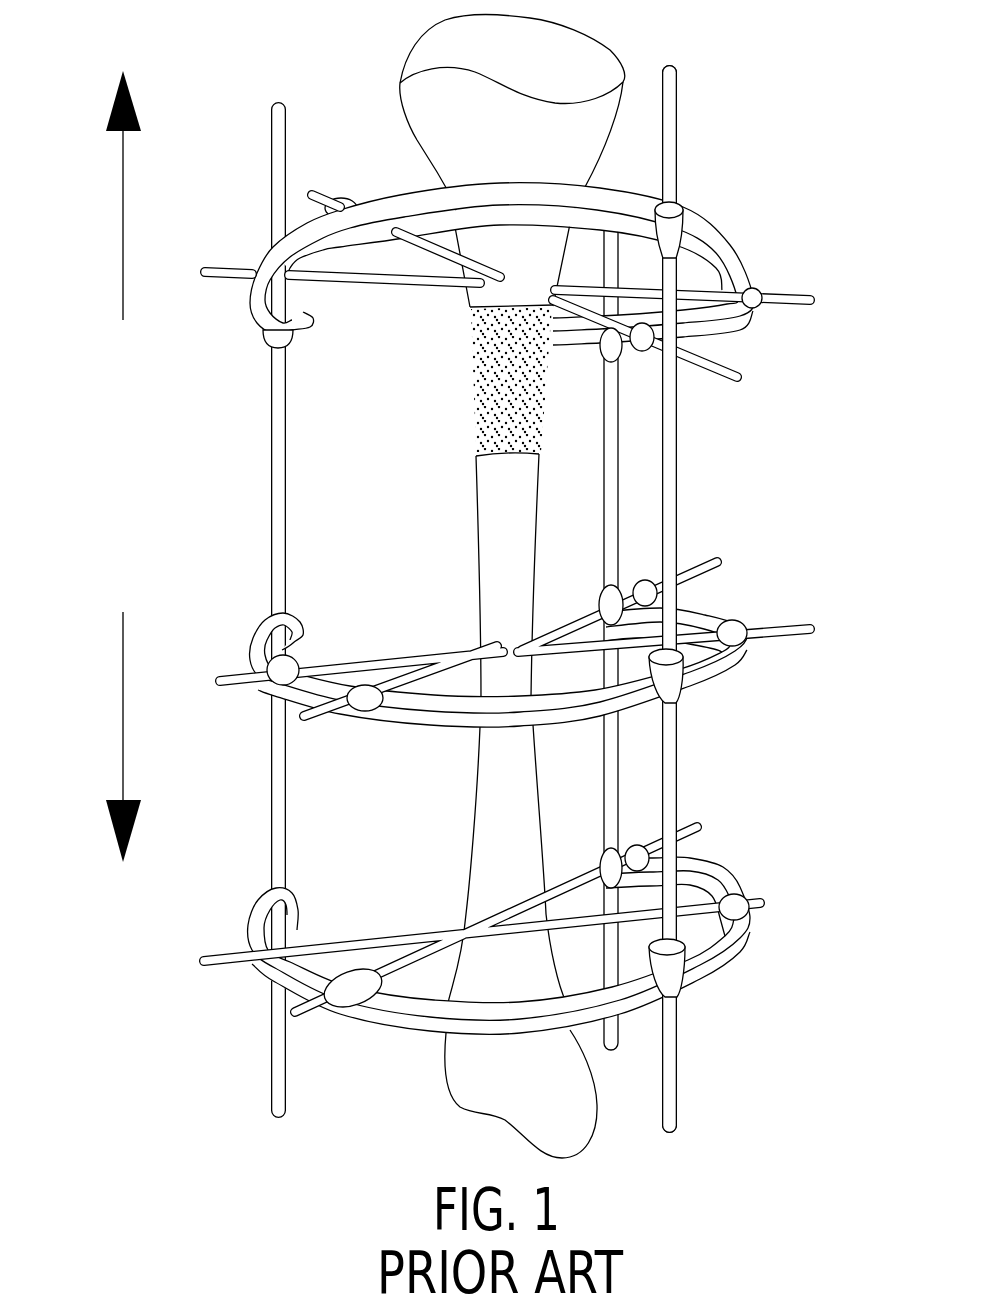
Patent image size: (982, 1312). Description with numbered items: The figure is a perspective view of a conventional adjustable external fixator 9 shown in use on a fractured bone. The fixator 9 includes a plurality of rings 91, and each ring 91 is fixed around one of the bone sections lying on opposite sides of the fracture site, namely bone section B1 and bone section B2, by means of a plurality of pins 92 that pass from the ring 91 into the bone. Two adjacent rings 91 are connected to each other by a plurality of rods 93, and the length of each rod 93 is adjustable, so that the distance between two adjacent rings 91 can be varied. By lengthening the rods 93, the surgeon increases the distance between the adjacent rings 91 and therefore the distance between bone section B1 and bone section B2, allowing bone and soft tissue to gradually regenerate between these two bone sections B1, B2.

The conventional adjustable external fixator 9 is at (731, 135).
The ring 91 is at (722, 243).
The pin 92 is at (717, 364).
The rod 93 is at (670, 771).
The bone section B1 is at (603, 62).
The bone section B2 is at (565, 1143).